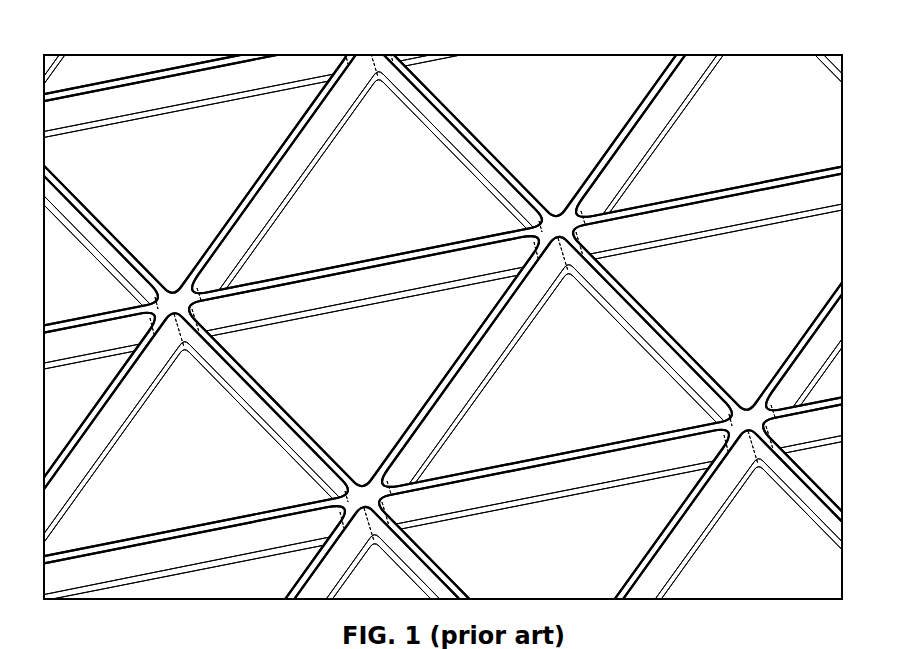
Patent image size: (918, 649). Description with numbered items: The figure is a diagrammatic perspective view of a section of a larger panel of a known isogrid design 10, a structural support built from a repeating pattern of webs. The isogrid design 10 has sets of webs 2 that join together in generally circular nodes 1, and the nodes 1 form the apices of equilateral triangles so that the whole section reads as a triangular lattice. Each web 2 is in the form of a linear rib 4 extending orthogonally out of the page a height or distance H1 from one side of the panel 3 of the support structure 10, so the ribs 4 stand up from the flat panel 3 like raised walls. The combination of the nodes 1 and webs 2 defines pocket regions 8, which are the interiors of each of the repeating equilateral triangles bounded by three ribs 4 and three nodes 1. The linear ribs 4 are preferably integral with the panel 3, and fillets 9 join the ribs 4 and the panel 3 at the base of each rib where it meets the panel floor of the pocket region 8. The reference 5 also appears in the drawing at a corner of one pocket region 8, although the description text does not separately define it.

The isogrid design 10 is at (506, 55).
The node 1 is at (556, 212).
The web 2 is at (425, 252).
The panel 3 is at (362, 405).
The linear rib 4 is at (258, 310).
The pocket corner 5 is at (566, 283).
The pocket region 8 is at (593, 384).
The fillet 9 is at (337, 316).
The height H1 is at (367, 288).